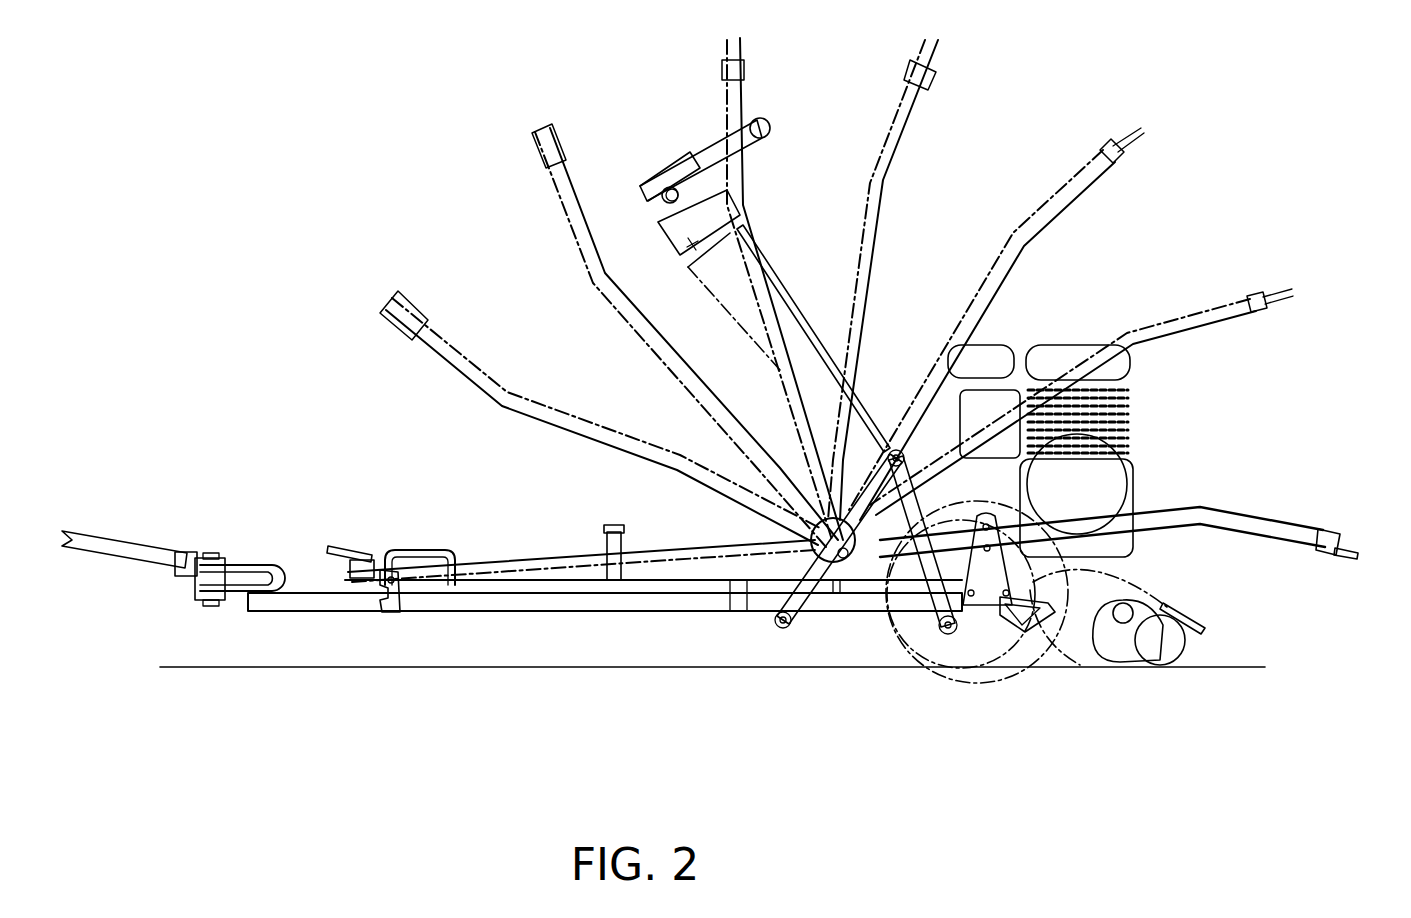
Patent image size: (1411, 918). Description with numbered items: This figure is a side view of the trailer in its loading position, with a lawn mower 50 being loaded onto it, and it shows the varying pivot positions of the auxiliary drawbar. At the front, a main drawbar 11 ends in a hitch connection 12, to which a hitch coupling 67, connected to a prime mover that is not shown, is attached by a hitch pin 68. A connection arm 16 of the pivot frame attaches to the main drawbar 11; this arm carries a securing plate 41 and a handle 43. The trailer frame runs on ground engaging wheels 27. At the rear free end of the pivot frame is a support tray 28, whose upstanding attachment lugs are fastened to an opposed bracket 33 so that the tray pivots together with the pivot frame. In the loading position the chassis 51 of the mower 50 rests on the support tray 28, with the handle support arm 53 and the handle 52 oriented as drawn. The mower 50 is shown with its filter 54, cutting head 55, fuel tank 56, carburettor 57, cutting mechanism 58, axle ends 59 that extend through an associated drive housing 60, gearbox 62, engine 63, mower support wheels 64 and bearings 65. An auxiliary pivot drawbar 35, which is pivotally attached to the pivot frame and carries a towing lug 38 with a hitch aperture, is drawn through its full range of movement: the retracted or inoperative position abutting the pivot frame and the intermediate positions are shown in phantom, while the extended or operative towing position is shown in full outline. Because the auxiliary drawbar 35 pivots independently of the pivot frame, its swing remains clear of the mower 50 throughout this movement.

The main drawbar 11 is at (538, 603).
The hitch connection 12 is at (263, 562).
The connection arm 16 is at (596, 587).
The ground engaging wheels 27 is at (1133, 650).
The support tray 28 is at (1047, 630).
The bracket 33 is at (967, 620).
The auxiliary pivot drawbar 35 is at (673, 557).
The towing lug 38 is at (360, 548).
The securing plate 41 is at (392, 618).
The handle 43 is at (450, 550).
The lawn mower 50 is at (1157, 369).
The chassis 51 is at (1142, 412).
The handle 52 is at (768, 146).
The handle support arm 53 is at (770, 268).
The filter 54 is at (1003, 360).
The cutting head 55 is at (1165, 597).
The fuel tank 56 is at (1060, 363).
The carburettor 57 is at (975, 407).
The cutting mechanism 58 is at (1157, 660).
The axle ends 59 is at (977, 620).
The drive housing 60 is at (1007, 653).
The gearbox 62 is at (1120, 465).
The engine 63 is at (1128, 506).
The mower support wheels 64 is at (1180, 650).
The bearings 65 is at (1103, 583).
The hitch coupling 67 is at (123, 540).
The hitch pin 68 is at (180, 583).